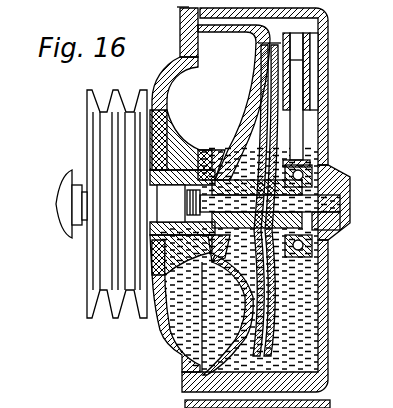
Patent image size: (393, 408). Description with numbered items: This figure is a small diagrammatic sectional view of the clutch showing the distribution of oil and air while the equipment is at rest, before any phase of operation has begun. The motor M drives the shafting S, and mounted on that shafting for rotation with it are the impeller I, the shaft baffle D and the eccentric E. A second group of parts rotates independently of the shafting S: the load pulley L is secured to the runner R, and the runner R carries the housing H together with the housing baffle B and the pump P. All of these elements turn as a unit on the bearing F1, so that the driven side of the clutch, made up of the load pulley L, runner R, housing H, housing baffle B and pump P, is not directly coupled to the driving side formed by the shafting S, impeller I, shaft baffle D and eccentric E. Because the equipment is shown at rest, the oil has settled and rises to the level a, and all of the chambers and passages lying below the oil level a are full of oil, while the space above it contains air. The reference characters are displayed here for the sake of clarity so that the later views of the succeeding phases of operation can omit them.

The housing H is at (180, 8).
The runner R is at (172, 68).
The load pulley L is at (115, 92).
The motor M is at (58, 196).
The housing baffle B is at (254, 48).
The pump P is at (300, 127).
The oil level a is at (313, 147).
The bearing F1 is at (340, 212).
The eccentric E is at (337, 232).
The shaft baffle D is at (280, 305).
The impeller I is at (235, 297).
The shafting S is at (171, 203).